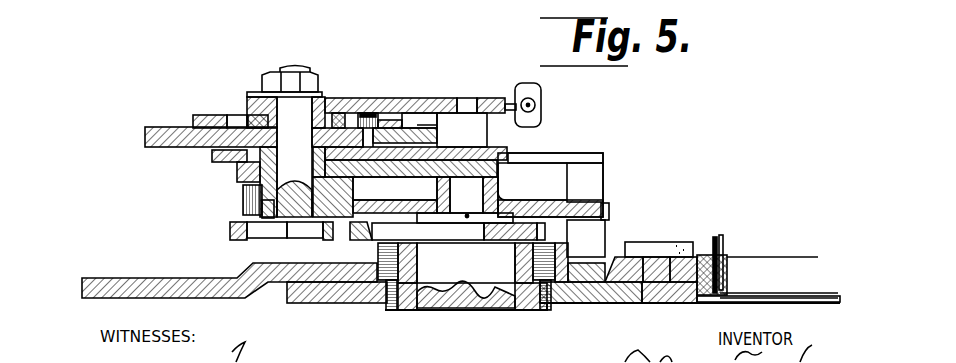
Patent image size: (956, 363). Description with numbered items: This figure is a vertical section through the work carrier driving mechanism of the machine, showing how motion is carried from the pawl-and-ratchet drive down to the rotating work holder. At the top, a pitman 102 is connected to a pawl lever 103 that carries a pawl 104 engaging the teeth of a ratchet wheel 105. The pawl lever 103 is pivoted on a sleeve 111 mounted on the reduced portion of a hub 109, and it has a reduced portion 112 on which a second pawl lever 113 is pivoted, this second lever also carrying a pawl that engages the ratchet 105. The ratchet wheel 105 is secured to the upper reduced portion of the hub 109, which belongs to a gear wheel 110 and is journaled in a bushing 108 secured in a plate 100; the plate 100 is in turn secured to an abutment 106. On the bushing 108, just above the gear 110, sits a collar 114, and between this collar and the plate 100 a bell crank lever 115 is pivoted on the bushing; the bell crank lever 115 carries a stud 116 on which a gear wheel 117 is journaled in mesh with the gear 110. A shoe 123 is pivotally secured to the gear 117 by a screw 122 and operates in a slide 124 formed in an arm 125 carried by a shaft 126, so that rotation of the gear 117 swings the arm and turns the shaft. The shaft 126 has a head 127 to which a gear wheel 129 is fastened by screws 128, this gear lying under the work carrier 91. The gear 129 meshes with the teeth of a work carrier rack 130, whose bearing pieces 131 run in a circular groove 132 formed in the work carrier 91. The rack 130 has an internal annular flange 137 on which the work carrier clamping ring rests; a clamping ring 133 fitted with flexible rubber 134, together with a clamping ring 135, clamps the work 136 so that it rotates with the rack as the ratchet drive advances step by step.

The work carrier 91 is at (104, 278).
The plate 100 is at (565, 158).
The pitman 102 is at (542, 96).
The pawl lever 103 is at (401, 110).
The pawl 104 is at (487, 137).
The ratchet wheel 105 is at (147, 129).
The abutment 106 is at (600, 172).
The bushing 108 is at (245, 168).
The hub 109 is at (306, 182).
The gear wheel 110 is at (263, 210).
The sleeve 111 is at (315, 110).
The reduced portion 112 is at (255, 97).
The second pawl lever 113 is at (250, 120).
The collar 114 is at (349, 187).
The bell crank lever 115 is at (532, 181).
The stud 116 is at (467, 195).
The gear wheel 117 is at (608, 205).
The screw 122 is at (343, 238).
The shoe 123 is at (300, 238).
The slide 124 is at (262, 232).
The arm 125 is at (230, 238).
The shaft 126 is at (472, 276).
The head 127 is at (448, 310).
The screw 128 is at (398, 312).
The gear wheel 129 is at (302, 305).
The work carrier rack 130 is at (670, 305).
The bearing piece 131 is at (668, 242).
The circular groove 132 is at (637, 248).
The clamping ring 133 is at (698, 254).
The rubber 134 is at (714, 247).
The clamping ring 135 is at (772, 271).
The work 136 is at (722, 237).
The internal annular flange 137 is at (728, 304).